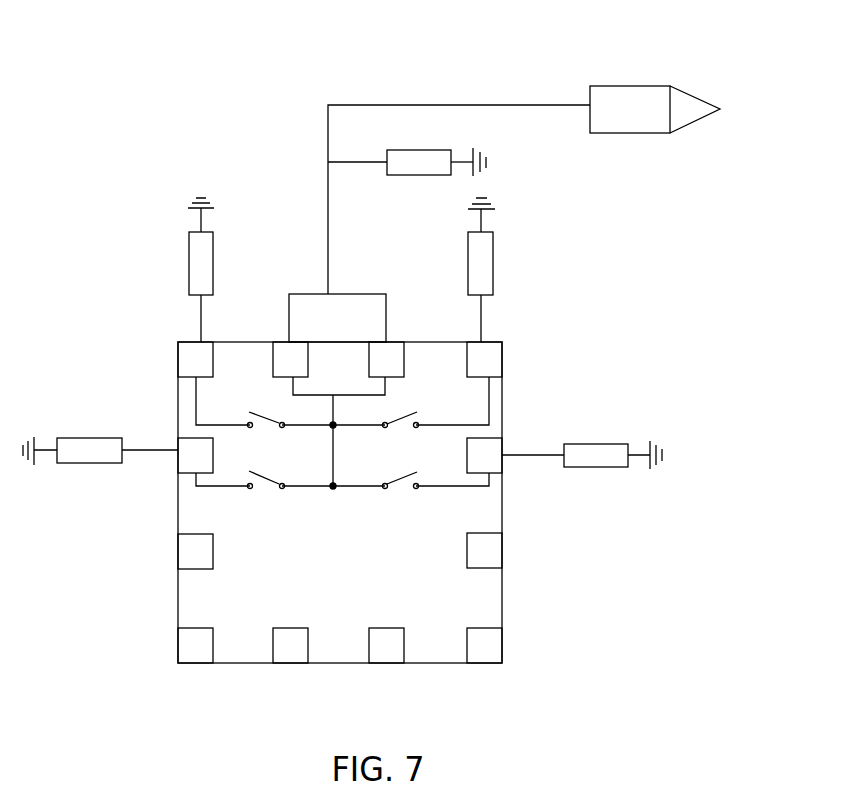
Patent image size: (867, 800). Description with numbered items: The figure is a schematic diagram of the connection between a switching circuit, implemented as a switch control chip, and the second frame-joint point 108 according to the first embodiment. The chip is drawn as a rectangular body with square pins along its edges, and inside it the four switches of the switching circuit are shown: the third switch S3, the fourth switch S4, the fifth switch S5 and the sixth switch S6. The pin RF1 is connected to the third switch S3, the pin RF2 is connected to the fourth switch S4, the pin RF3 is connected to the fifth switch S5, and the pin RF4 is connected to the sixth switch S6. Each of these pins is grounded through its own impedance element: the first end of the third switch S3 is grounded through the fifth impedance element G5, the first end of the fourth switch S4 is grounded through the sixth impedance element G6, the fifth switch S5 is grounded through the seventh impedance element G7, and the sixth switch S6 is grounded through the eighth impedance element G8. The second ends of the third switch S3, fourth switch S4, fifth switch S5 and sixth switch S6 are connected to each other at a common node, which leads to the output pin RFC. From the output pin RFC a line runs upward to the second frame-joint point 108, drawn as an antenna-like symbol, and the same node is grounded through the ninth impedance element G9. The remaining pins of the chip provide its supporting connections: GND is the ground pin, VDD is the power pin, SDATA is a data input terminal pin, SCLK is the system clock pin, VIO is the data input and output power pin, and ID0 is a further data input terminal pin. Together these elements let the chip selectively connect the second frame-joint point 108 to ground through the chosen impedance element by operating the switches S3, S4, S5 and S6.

The second frame-joint point 108 is at (700, 97).
The fifth impedance element G5 is at (182, 270).
The sixth impedance element G6 is at (100, 464).
The seventh impedance element G7 is at (499, 270).
The eighth impedance element G8 is at (582, 470).
The ninth impedance element G9 is at (407, 149).
The third switch S3 is at (291, 404).
The fourth switch S4 is at (291, 495).
The fifth switch S5 is at (380, 404).
The sixth switch S6 is at (376, 496).
The pin connected to the third switch RF1 is at (201, 368).
The pin connected to the fourth switch RF2 is at (189, 465).
The pin connected to the fifth switch RF3 is at (473, 368).
The pin connected to the sixth switch RF4 is at (484, 451).
The output pin RFC is at (413, 295).
The ground pin GND is at (166, 551).
The data input terminal pin ID0 is at (510, 550).
The data input terminal pin SDATA is at (193, 664).
The system clock pin SCLK is at (299, 664).
The power pin VDD is at (389, 664).
The data input and output power pin VIO is at (479, 664).